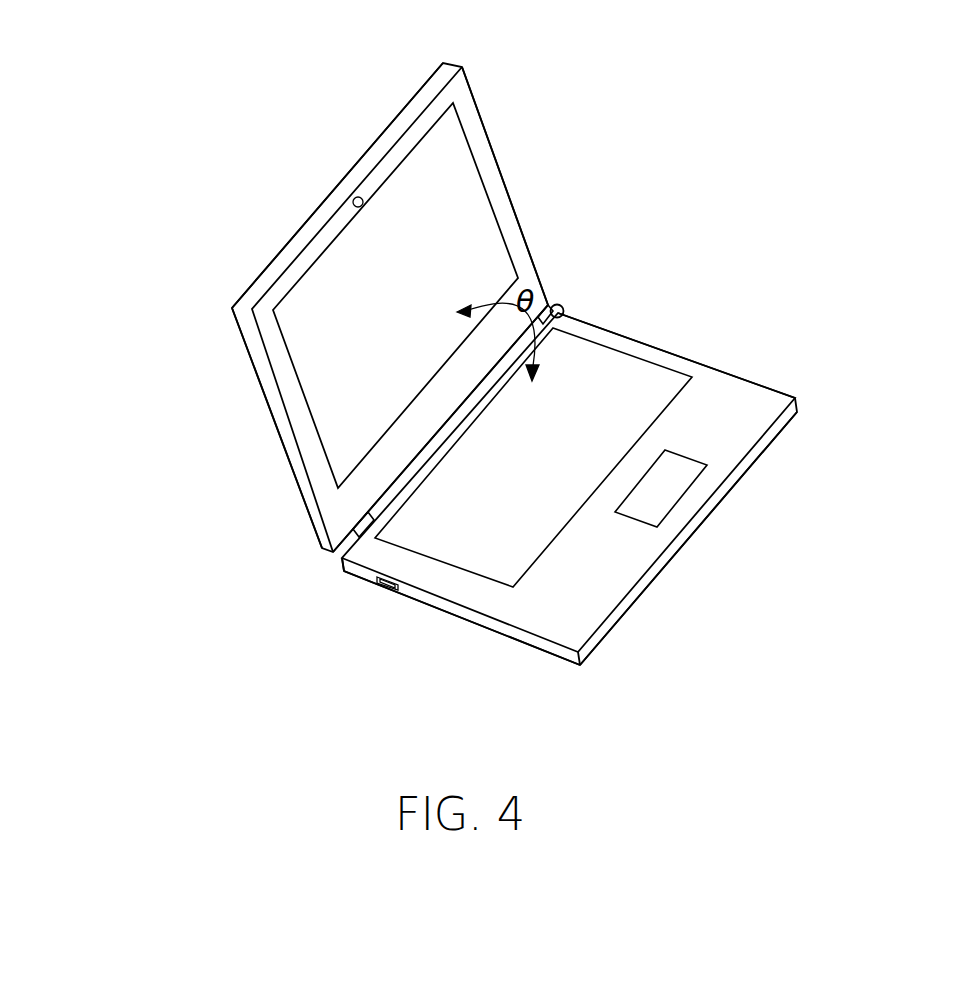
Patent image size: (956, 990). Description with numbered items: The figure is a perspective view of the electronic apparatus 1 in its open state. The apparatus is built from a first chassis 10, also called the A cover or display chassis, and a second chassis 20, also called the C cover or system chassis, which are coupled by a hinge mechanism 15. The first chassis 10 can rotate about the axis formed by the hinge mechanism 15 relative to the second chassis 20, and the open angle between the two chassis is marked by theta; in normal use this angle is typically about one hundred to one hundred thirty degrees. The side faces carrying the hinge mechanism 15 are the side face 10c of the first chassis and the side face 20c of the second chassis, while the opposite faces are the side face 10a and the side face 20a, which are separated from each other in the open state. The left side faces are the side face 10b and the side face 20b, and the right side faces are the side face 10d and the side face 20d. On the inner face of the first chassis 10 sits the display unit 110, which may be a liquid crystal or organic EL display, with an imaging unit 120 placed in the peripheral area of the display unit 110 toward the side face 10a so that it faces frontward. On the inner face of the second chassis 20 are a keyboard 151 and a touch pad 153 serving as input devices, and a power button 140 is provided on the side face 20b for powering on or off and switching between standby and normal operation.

The electronic apparatus 1 is at (98, 93).
The first chassis 10 is at (226, 477).
The side face 10a is at (290, 252).
The side face 10b is at (267, 390).
The side face 10c is at (562, 305).
The side face 10d is at (492, 146).
The display unit 110 is at (492, 252).
The imaging unit 120 is at (360, 197).
The hinge mechanism 15 is at (368, 513).
The second chassis 20 is at (668, 615).
The side face 20a is at (779, 421).
The side face 20b is at (503, 628).
The side face 20c is at (343, 566).
The side face 20d is at (758, 381).
The power button 140 is at (385, 585).
The keyboard 151 is at (636, 386).
The touch pad 153 is at (680, 493).